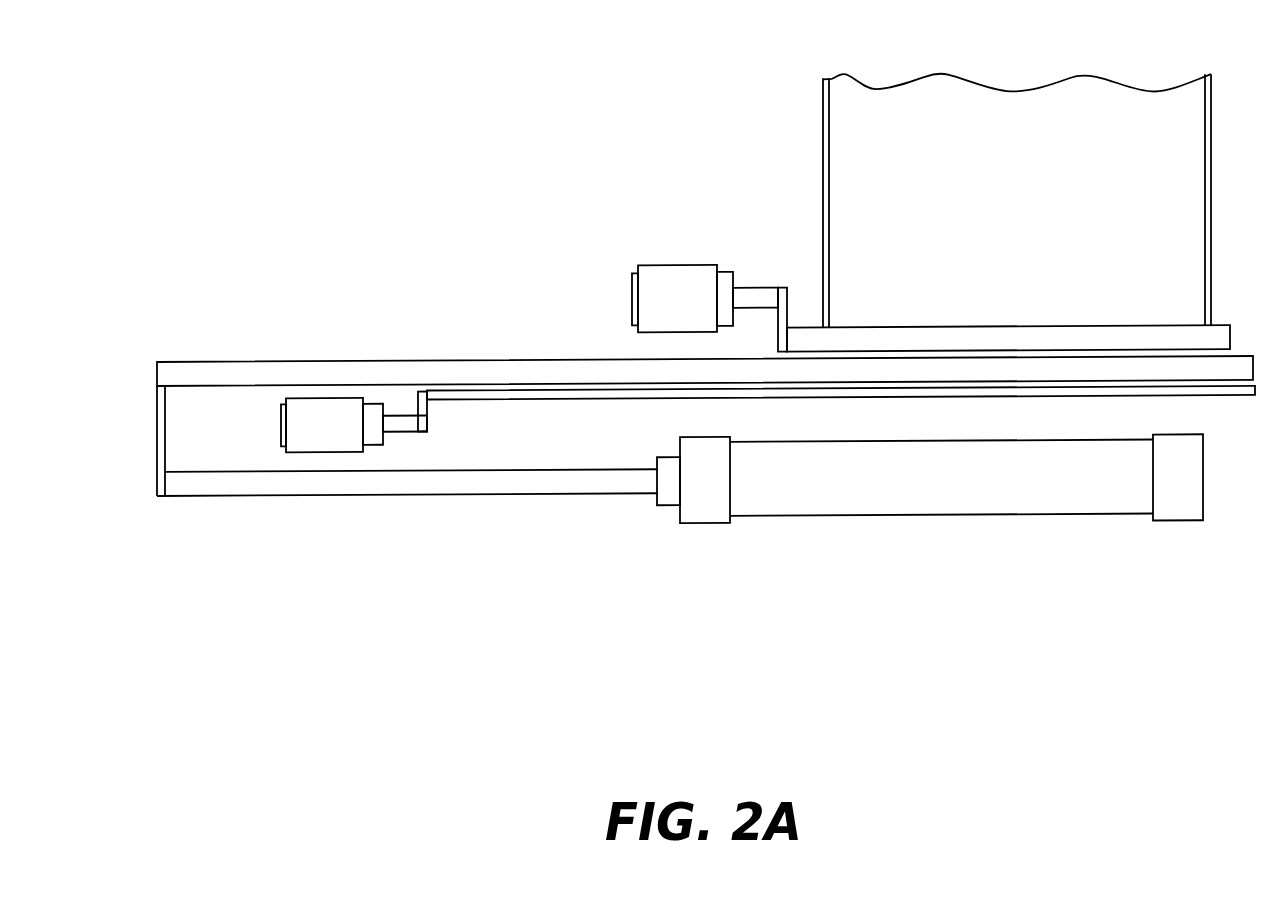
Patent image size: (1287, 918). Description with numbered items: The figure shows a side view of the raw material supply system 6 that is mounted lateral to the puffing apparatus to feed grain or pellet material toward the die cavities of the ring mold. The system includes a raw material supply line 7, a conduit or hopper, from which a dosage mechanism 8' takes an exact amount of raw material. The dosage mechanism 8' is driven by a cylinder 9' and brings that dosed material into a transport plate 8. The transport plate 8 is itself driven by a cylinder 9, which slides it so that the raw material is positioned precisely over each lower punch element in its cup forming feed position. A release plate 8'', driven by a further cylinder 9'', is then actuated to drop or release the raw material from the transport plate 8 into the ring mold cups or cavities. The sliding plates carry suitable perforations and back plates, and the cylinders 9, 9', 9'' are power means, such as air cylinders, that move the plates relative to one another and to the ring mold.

The raw material supply system 6 is at (538, 90).
The raw material supply line 7 is at (835, 121).
The transport plate 8 is at (705, 379).
The dosage mechanism 8' is at (993, 292).
The release plate 8'' is at (819, 471).
The cylinder 9 is at (684, 526).
The cylinder 9' is at (649, 299).
The cylinder 9'' is at (332, 477).